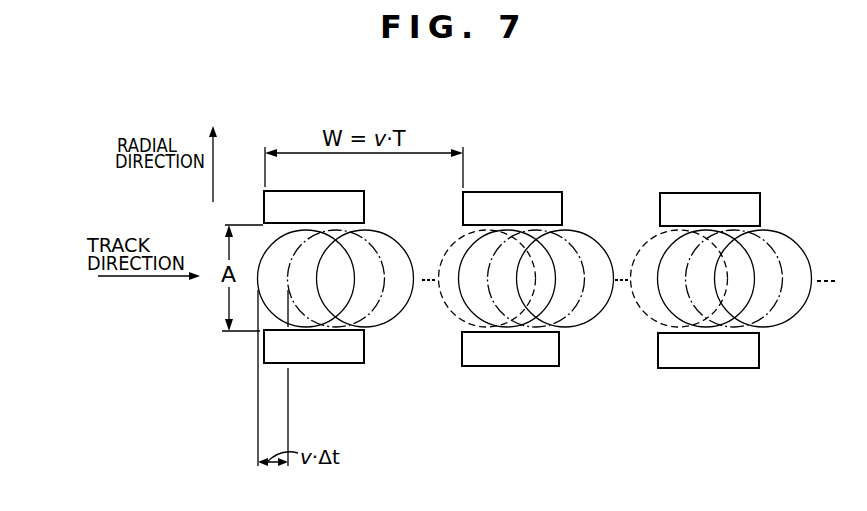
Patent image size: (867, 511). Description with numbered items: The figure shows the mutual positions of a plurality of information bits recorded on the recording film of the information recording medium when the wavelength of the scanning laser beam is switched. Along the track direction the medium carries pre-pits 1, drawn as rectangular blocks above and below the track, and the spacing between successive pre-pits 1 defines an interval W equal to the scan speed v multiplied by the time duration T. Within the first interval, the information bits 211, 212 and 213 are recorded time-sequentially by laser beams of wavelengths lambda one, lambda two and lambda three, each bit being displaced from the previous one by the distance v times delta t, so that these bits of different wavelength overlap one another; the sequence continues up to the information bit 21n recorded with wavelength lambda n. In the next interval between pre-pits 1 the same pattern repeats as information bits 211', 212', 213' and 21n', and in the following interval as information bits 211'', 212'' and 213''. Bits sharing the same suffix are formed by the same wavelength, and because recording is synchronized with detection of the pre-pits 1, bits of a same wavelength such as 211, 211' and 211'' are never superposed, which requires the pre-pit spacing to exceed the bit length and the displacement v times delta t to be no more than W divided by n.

The pre-pit 1 is at (366, 202).
The information bit 211 is at (283, 301).
The information bit 212 is at (340, 322).
The information bit 213 is at (373, 296).
The information bit 21n is at (476, 321).
The information bit 211' is at (479, 265).
The information bit 212' is at (561, 266).
The information bit 213' is at (565, 321).
The information bit 21n' is at (664, 297).
The information bit 211'' is at (689, 321).
The information bit 212'' is at (757, 297).
The information bit 213'' is at (777, 266).